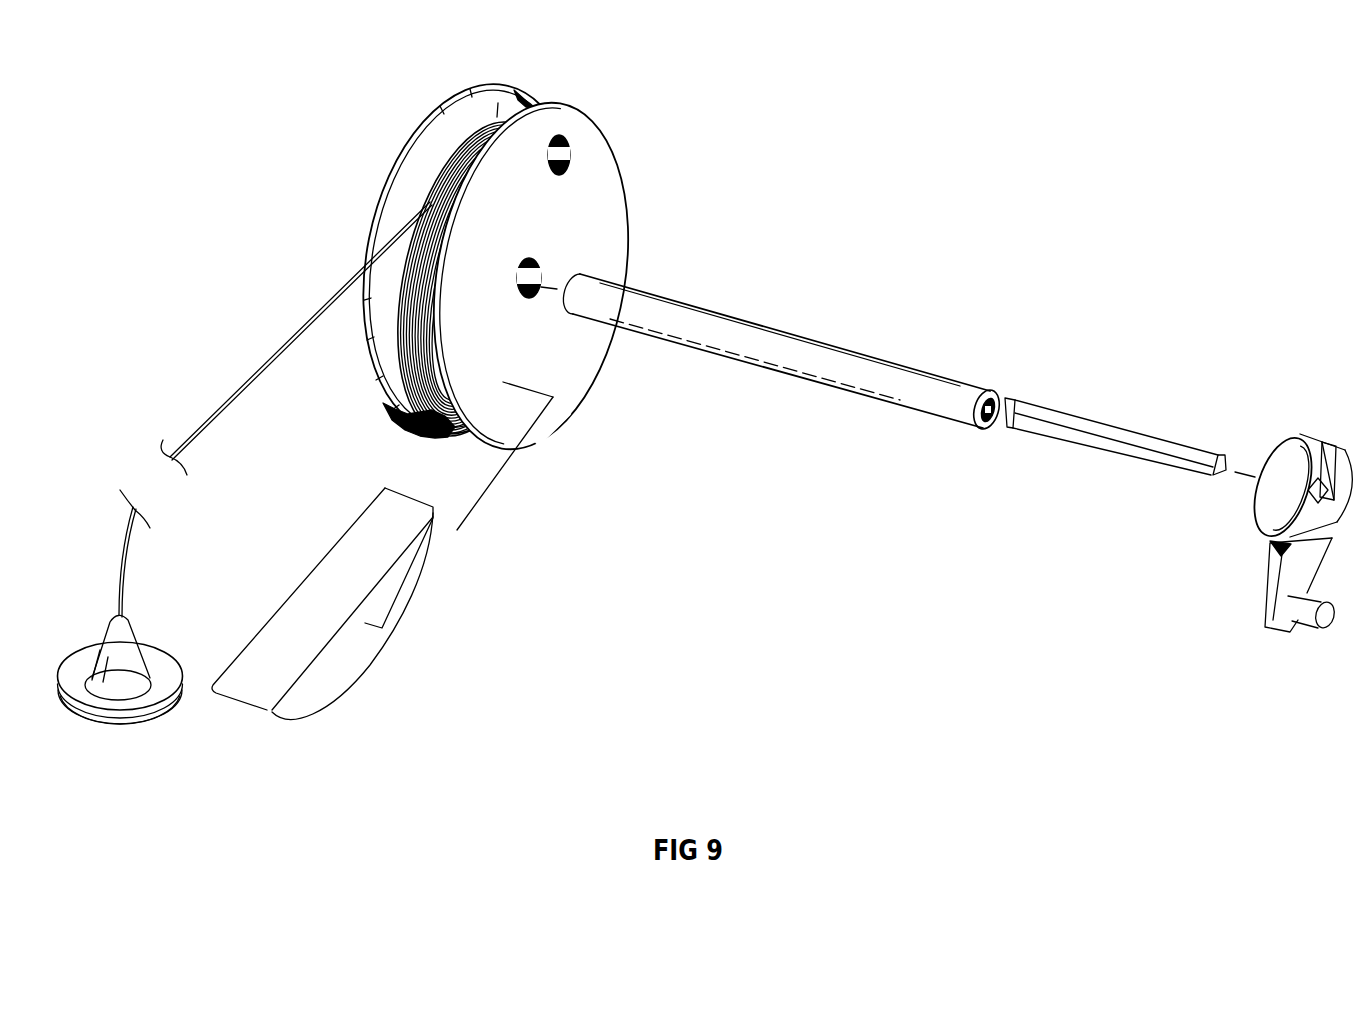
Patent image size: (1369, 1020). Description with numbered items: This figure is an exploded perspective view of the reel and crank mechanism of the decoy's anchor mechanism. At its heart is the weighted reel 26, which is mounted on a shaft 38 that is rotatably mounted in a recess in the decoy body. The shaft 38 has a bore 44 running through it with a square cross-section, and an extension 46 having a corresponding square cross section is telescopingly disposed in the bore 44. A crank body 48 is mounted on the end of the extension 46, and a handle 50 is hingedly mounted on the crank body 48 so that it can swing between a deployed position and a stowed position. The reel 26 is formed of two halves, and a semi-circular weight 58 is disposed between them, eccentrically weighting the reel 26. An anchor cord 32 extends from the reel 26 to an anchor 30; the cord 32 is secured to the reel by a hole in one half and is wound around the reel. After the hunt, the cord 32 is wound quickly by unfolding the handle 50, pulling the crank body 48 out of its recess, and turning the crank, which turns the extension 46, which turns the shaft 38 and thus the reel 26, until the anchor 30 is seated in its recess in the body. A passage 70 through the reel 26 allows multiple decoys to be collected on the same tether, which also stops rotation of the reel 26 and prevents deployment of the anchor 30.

The weighted reel 26 is at (593, 190).
The passage 70 is at (573, 152).
The anchor cord 32 is at (330, 300).
The anchor 30 is at (141, 722).
The semi-circular weight 58 is at (400, 607).
The shaft 38 is at (703, 332).
The bore 44 is at (1003, 403).
The extension 46 is at (1128, 437).
The crank body 48 is at (1280, 460).
The handle 50 is at (1280, 563).